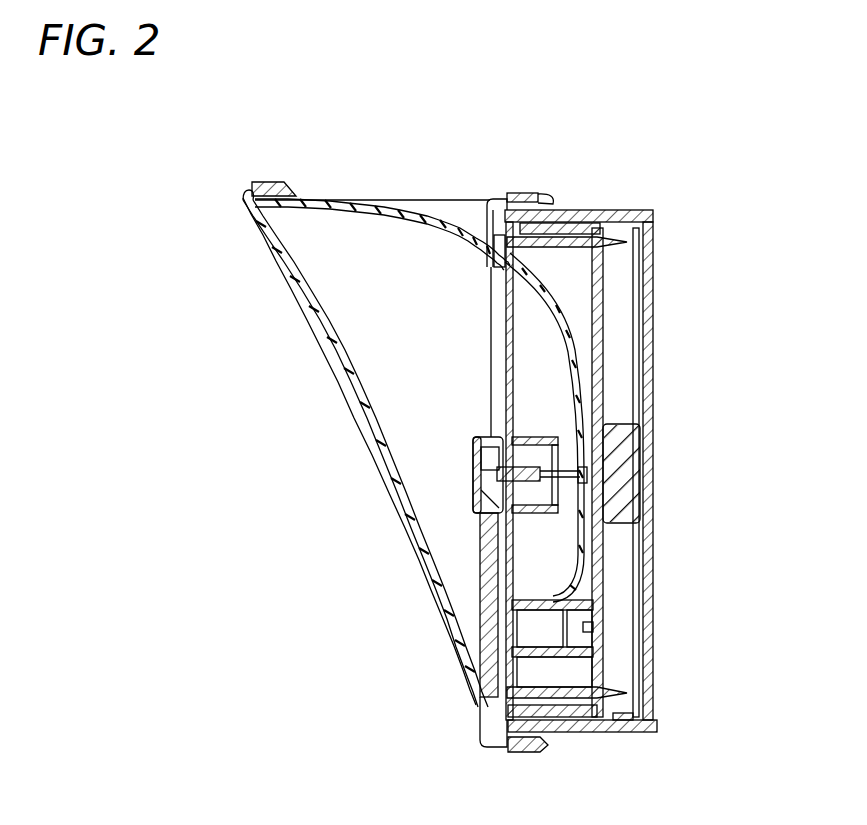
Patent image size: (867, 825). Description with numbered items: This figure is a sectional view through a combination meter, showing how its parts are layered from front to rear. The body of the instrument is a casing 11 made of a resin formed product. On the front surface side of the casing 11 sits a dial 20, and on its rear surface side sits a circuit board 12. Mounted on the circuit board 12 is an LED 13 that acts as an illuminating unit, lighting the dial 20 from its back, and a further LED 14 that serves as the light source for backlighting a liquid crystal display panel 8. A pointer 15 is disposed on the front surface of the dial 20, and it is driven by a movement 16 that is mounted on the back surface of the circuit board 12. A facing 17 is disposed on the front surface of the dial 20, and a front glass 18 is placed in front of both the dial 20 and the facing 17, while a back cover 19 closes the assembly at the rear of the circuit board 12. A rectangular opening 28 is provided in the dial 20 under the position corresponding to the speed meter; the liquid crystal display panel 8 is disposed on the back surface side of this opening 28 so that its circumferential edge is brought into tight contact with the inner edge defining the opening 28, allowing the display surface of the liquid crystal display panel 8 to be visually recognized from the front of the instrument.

The liquid crystal display panel 8 is at (512, 632).
The casing 11 is at (560, 212).
The circuit board 12 is at (600, 297).
The LED (illuminating unit) 13 is at (608, 441).
The LED (light source) 14 is at (598, 627).
The pointer 15 is at (480, 518).
The movement 16 is at (640, 462).
The facing 17 is at (440, 225).
The front glass 18 is at (297, 266).
The back cover 19 is at (657, 558).
The dial 20 is at (490, 298).
The rectangular opening 28 is at (510, 612).